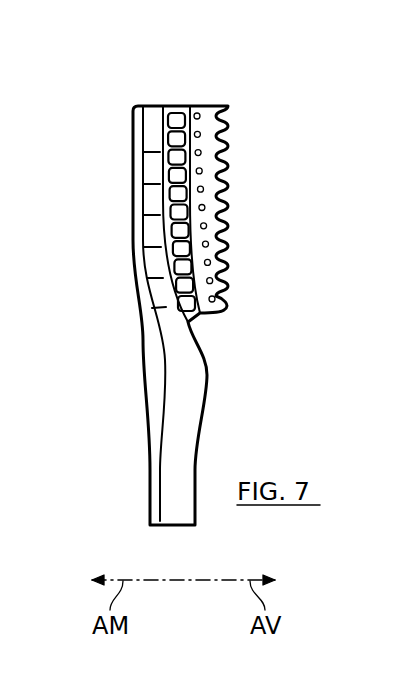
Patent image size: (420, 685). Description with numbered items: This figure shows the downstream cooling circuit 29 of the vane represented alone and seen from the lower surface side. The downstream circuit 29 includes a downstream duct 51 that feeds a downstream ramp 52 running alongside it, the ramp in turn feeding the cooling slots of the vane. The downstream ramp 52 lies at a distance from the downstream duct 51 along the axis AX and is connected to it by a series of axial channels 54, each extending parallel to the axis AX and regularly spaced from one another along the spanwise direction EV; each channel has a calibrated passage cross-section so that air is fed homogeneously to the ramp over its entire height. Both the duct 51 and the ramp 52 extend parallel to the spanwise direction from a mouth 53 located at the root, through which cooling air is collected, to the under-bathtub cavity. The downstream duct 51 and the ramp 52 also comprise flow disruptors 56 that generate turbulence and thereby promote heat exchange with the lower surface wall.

The downstream circuit 29 is at (97, 126).
The downstream duct 51 is at (136, 262).
The downstream ramp 52 is at (222, 281).
The mouth 53 is at (168, 528).
The axial channels 54 is at (182, 173).
The flow disruptors 56 is at (133, 152).